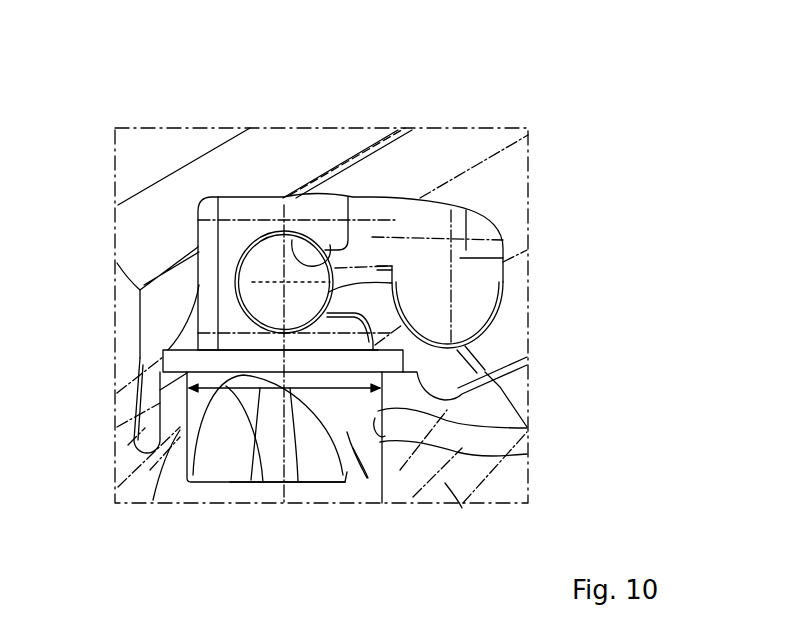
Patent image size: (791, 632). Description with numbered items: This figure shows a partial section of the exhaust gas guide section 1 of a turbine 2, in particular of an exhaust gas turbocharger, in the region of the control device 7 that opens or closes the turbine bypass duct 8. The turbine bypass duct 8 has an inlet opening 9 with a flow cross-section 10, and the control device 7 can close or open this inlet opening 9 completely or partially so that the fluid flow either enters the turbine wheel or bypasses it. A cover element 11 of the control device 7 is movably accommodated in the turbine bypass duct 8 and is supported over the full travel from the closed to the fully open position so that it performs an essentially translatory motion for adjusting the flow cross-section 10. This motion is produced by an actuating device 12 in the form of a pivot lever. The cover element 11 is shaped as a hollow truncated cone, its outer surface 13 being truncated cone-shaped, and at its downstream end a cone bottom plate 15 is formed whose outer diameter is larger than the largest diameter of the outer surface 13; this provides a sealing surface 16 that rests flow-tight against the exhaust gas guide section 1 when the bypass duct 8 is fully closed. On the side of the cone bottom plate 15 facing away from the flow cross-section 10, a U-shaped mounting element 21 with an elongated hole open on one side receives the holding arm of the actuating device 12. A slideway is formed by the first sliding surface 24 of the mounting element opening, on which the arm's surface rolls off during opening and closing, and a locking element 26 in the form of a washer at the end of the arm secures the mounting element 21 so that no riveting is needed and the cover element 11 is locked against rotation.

The exhaust gas guide section 1 is at (447, 490).
The turbine 2 is at (556, 166).
The control device 7 is at (405, 178).
The turbine bypass duct 8 is at (530, 454).
The inlet opening 9 is at (528, 418).
The flow cross-section 10 is at (265, 485).
The cover element 11 is at (318, 485).
The actuating device 12 is at (503, 242).
The outer surface 13 is at (353, 490).
The cone bottom plate 15 is at (140, 360).
The sealing surface 16 is at (134, 398).
The mounting element 21 is at (254, 199).
The first sliding surface 24 is at (292, 240).
The locking element 26 is at (262, 258).